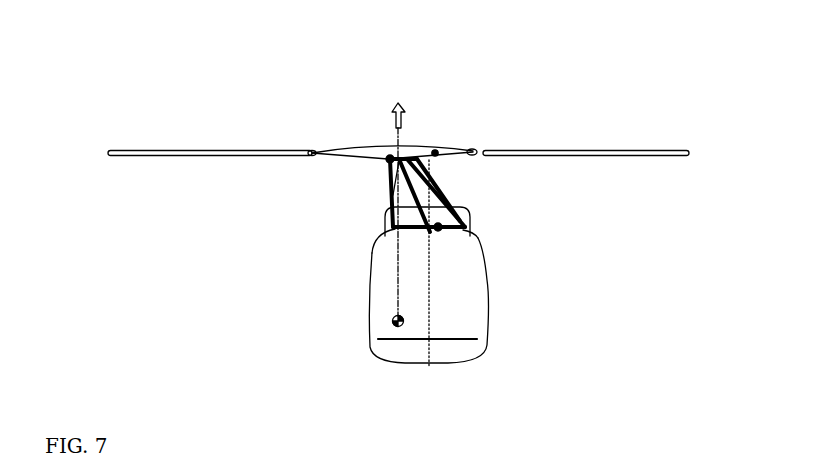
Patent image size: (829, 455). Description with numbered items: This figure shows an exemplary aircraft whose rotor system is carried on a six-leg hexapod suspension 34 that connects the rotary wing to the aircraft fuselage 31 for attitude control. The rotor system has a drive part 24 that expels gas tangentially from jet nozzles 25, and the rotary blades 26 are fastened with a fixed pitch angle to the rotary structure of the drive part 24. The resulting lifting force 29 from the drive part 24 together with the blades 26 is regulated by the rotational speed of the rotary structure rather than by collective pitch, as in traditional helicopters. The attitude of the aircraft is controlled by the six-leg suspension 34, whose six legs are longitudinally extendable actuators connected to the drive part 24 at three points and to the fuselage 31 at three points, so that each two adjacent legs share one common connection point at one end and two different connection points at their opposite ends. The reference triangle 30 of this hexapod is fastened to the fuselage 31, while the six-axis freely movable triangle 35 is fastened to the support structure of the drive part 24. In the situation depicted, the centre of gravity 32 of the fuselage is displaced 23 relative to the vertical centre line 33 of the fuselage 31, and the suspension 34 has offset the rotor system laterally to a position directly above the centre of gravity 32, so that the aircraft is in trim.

The displacement 23 is at (395, 267).
The drive part 24 is at (435, 150).
The jet nozzles 25 is at (473, 148).
The rotary blades 26 is at (597, 151).
The lifting force 29 is at (401, 97).
The reference triangle 30 is at (480, 233).
The aircraft fuselage 31 is at (488, 300).
The centre of gravity 32 is at (390, 321).
The vertical centre line 33 is at (430, 284).
The 6-leg suspension 34 is at (373, 192).
The 6-axis freely movable triangle 35 is at (388, 159).